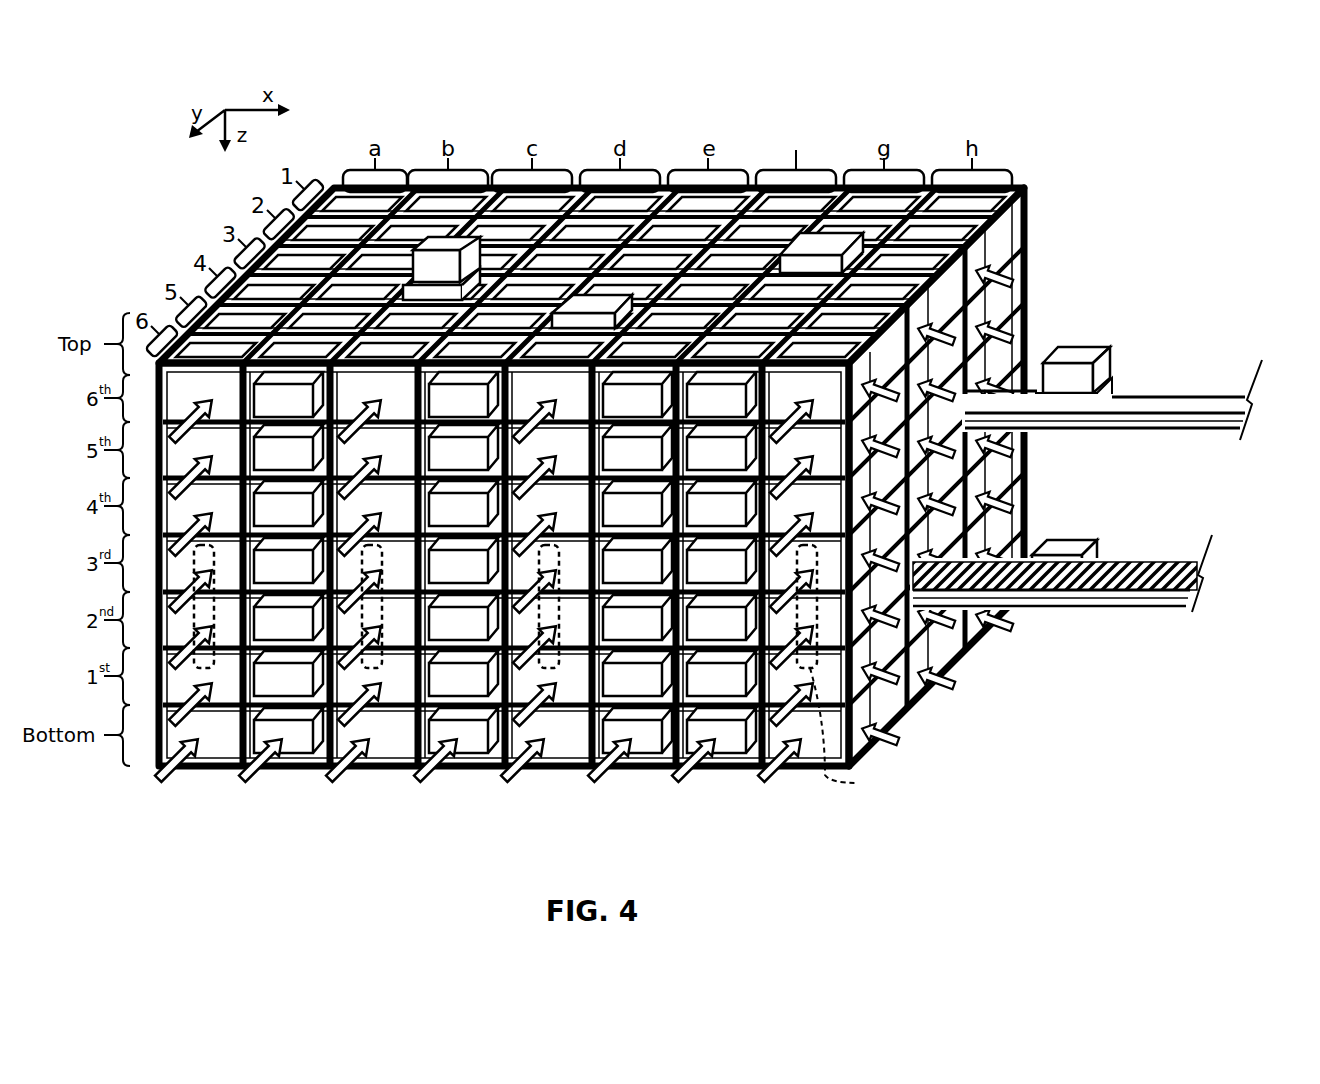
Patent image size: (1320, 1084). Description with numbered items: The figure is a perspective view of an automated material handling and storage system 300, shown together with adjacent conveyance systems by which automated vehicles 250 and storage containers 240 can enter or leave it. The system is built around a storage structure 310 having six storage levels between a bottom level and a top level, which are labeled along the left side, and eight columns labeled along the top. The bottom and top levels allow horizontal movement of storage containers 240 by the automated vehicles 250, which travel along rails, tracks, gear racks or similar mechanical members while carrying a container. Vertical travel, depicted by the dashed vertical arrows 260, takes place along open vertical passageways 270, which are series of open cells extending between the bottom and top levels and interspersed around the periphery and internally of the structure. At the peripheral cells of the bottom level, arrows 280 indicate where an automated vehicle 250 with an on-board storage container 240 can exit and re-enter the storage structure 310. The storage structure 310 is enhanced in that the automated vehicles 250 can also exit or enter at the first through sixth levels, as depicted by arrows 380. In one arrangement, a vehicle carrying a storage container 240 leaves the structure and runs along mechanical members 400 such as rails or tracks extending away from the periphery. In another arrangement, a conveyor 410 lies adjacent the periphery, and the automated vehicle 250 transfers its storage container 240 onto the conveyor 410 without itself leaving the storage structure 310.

The storage container 240 is at (682, 495).
The automated vehicle 250 is at (845, 240).
The vertical arrows 260 is at (208, 615).
The open vertical passageways 270 is at (722, 205).
The arrows 280 is at (337, 783).
The material handling and storage system 300 is at (986, 114).
The storage structure 310 is at (1032, 213).
The arrows 380 is at (205, 402).
The mechanical members 400 is at (1228, 385).
The conveyor 410 is at (1168, 558).